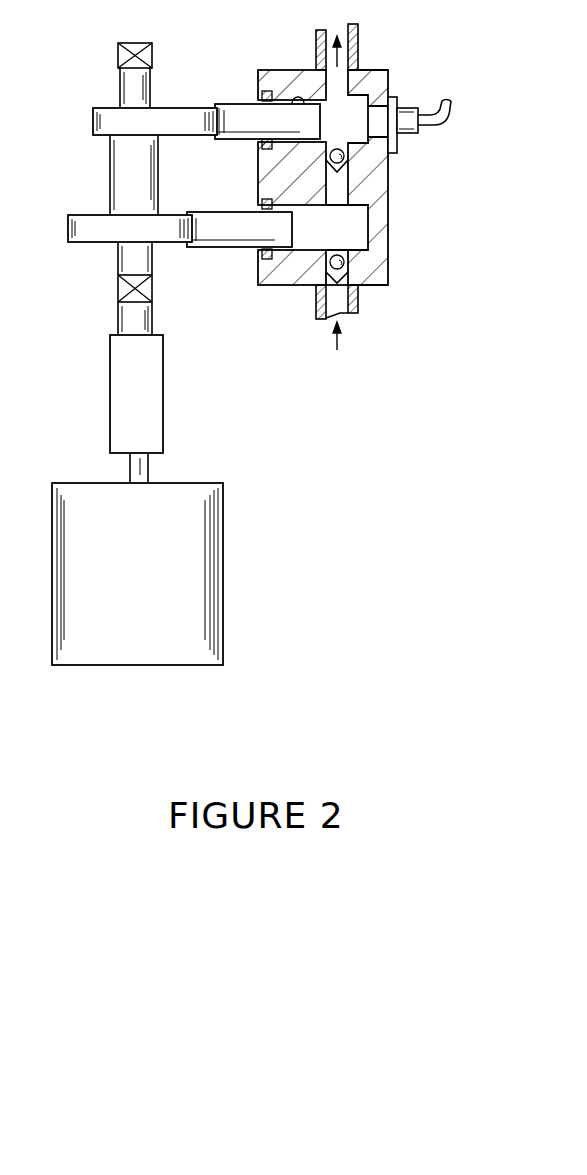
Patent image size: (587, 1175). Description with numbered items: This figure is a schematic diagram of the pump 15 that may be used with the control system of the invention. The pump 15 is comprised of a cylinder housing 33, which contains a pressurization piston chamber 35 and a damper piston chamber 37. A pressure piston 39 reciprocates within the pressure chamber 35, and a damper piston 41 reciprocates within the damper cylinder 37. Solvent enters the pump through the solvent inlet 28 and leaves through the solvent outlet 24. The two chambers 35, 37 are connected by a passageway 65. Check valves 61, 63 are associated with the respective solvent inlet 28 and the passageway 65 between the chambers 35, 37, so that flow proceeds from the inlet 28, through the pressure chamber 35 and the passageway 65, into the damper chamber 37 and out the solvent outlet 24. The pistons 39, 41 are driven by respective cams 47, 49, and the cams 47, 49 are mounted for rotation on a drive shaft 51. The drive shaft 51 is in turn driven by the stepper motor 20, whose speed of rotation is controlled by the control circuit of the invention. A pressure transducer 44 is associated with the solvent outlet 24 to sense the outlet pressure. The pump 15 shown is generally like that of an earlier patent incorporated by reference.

The pump 15 is at (406, 64).
The stepper motor 20 is at (138, 583).
The solvent outlet 24 is at (343, 58).
The solvent inlet 28 is at (345, 306).
The cylinder housing 33 is at (380, 86).
The pressurization piston chamber 35 is at (302, 208).
The damper piston chamber 37 is at (300, 99).
The pressure piston 39 is at (233, 218).
The damper piston 41 is at (235, 137).
The pressure transducer 44 is at (407, 138).
The cam 47 is at (93, 218).
The cam 49 is at (170, 113).
The drive shaft 51 is at (143, 265).
The check valve 61 is at (337, 253).
The check valve 63 is at (330, 152).
The passageway 65 is at (348, 184).